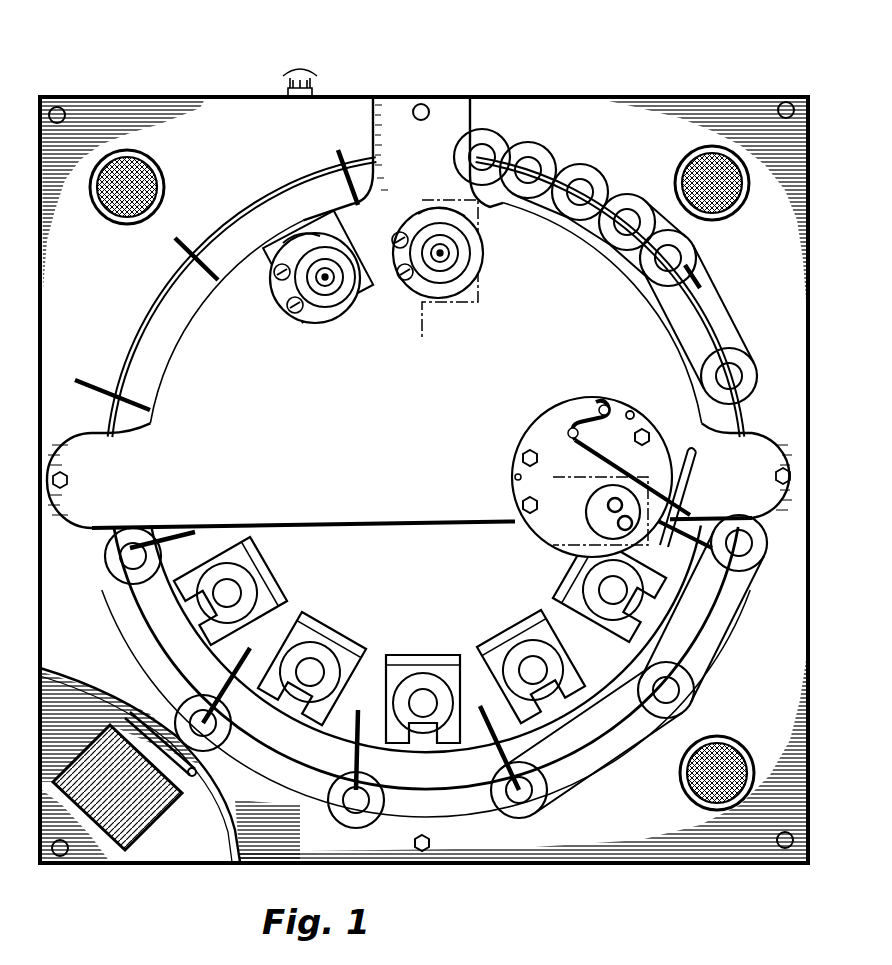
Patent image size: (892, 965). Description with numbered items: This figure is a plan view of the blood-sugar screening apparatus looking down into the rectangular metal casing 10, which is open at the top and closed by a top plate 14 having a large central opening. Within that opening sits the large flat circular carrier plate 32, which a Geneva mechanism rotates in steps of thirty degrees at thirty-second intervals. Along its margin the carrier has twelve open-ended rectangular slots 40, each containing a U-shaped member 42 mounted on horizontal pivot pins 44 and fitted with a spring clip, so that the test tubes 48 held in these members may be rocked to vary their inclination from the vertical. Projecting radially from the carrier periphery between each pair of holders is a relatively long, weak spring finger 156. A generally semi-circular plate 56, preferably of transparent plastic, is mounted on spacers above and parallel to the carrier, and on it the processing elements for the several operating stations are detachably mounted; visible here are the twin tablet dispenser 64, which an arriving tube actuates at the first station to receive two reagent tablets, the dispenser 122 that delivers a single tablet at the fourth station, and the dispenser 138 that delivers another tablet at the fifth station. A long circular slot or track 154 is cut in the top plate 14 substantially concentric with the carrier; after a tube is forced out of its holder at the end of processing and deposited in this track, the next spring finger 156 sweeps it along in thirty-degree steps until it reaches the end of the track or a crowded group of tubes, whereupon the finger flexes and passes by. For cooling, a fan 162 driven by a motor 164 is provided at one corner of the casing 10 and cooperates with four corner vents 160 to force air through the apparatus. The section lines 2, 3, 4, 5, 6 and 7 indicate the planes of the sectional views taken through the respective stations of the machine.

The section line 2- 2 is at (28, 419).
The section line 3- 3 is at (422, 478).
The section line 4- 4 is at (422, 478).
The section line 5- 5 is at (421, 540).
The section line 6- 6 is at (422, 478).
The section line 7- 7 is at (422, 478).
The casing 10 is at (112, 866).
The top plate 14 is at (545, 104).
The carrier plate 32 is at (508, 626).
The rectangular slots 40 is at (430, 660).
The U-shaped members 42 is at (354, 650).
The horizontal pivot pins 44 is at (272, 639).
The test tubes 48 is at (575, 165).
The semi-circular plate 56 is at (450, 122).
The twin tablet dispenser 64 is at (628, 395).
The dispenser 122 is at (400, 212).
The dispenser 138 is at (292, 322).
The circular slot or track 154 is at (120, 612).
The spring finger 156 is at (338, 160).
The corner vents 160 is at (150, 165).
The fan 162 is at (120, 722).
The motor 164 is at (88, 758).